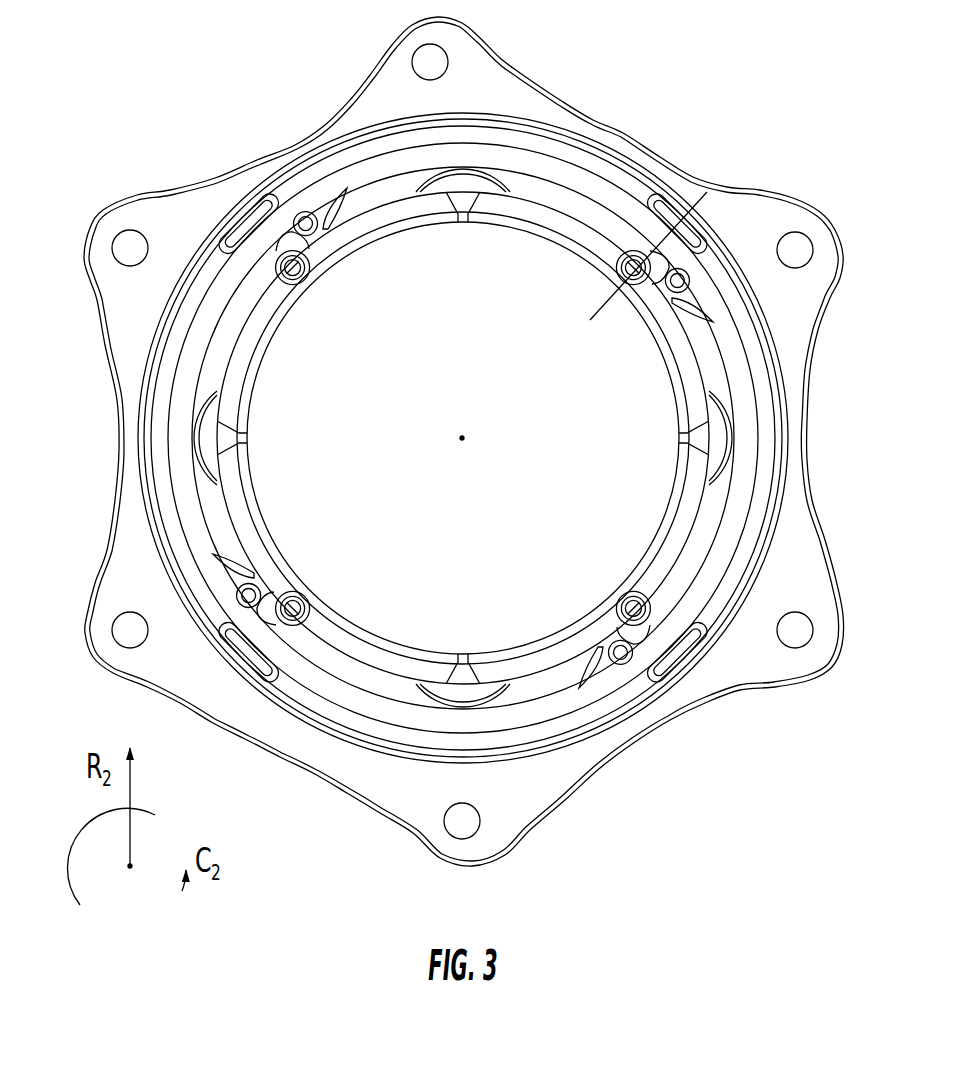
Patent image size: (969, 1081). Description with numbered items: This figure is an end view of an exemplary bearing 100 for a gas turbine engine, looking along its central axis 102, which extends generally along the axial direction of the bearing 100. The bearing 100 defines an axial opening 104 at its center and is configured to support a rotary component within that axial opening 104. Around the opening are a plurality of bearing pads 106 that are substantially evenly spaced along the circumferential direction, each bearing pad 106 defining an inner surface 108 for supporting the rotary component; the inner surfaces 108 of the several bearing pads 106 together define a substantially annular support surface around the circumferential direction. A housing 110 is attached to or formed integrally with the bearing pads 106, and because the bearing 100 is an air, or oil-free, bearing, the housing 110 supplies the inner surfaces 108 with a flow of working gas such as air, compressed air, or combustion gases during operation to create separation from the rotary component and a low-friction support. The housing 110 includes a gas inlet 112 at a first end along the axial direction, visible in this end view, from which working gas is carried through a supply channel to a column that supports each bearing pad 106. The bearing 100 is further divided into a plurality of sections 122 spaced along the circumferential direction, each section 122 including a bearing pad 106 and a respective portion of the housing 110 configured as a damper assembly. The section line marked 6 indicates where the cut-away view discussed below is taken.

The bearing 100 is at (725, 56).
The central axis 102 is at (464, 437).
The axial opening 104 is at (623, 515).
The bearing pad 106 is at (365, 250).
The inner surface 108 is at (266, 360).
The housing 110 is at (199, 548).
The gas inlet 112 is at (244, 229).
The section 122 is at (343, 187).
The section line 6- 6 is at (707, 192).